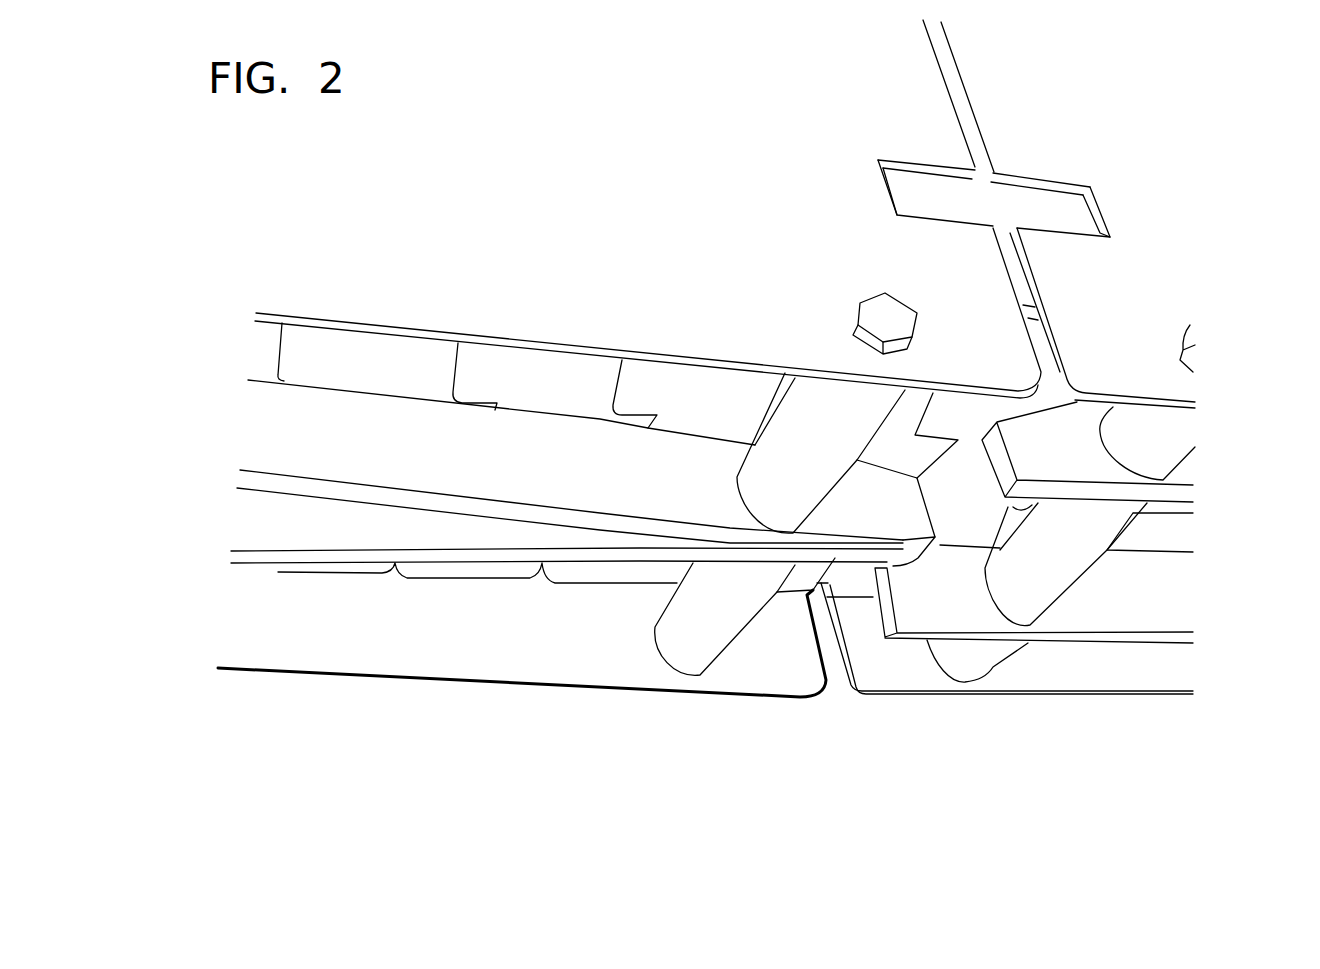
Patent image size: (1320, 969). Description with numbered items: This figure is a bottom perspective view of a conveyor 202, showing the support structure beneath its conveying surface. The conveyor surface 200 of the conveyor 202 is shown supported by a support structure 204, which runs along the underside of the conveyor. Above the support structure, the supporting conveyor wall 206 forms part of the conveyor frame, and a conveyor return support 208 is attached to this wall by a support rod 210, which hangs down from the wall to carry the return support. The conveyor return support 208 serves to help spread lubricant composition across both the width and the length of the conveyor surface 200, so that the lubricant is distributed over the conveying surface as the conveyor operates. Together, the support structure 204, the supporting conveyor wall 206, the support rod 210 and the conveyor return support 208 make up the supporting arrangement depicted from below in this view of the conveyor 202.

The conveyor surface 200 is at (700, 390).
The conveyor 202 is at (1160, 153).
The support structure 204 is at (557, 712).
The supporting conveyor wall 206 is at (787, 200).
The conveyor return support 208 is at (647, 482).
The support rod 210 is at (832, 455).